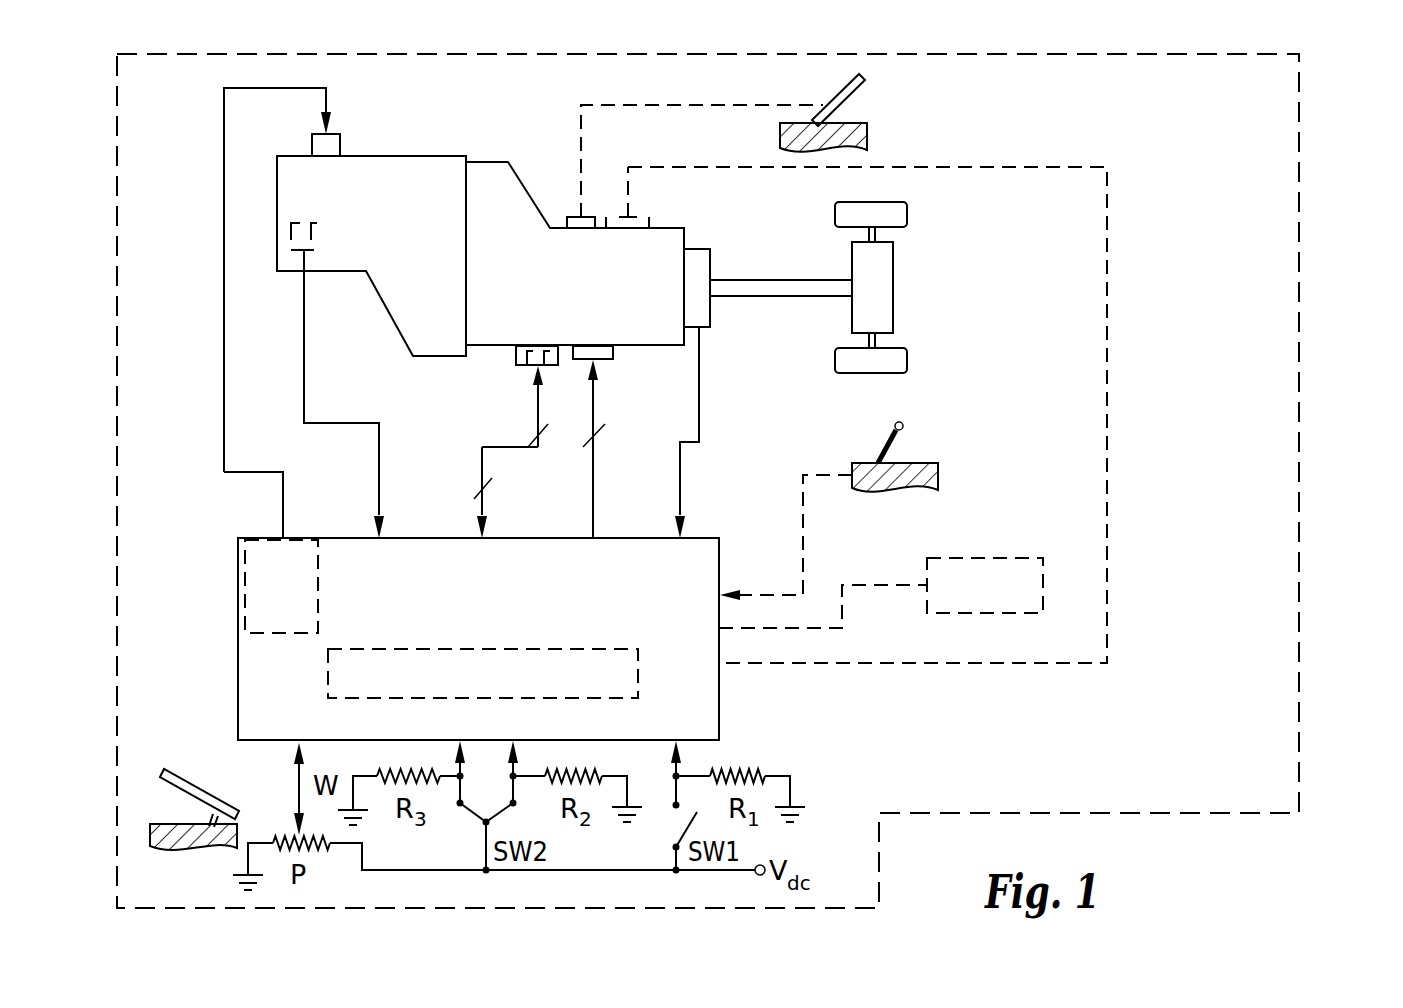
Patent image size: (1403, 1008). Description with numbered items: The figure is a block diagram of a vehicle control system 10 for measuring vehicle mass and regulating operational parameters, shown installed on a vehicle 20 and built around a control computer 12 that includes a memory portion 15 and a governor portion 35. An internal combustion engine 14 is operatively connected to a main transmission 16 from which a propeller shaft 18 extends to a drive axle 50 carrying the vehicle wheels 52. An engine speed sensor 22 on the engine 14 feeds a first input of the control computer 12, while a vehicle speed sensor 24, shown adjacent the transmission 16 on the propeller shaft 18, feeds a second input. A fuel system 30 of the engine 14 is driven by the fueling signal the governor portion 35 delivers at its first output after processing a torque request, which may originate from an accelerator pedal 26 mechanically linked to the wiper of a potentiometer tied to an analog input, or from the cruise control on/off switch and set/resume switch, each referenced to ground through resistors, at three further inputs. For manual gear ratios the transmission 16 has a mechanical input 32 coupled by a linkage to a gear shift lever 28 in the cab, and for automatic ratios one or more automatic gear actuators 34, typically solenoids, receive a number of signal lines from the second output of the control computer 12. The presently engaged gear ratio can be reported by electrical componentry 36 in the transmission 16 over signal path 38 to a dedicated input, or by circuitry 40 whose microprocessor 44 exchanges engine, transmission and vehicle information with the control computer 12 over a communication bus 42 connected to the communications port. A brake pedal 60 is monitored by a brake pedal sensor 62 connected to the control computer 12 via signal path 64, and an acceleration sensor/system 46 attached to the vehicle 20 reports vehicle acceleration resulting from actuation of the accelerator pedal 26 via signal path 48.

The control system 10 is at (1318, 400).
The control computer 12 is at (238, 665).
The internal combustion engine 14 is at (423, 156).
The memory portion 15 is at (638, 670).
The main transmission 16 is at (480, 162).
The propeller shaft 18 is at (764, 280).
The vehicle 20 is at (1299, 118).
The engine speed sensor 22 is at (291, 233).
The vehicle speed sensor 24 is at (700, 249).
The accelerator pedal 26 is at (176, 773).
The gear shift lever 28 is at (862, 90).
The fuel system 30 is at (338, 134).
The mechanical input 32 is at (572, 216).
The automatic gear actuators 34 is at (615, 360).
The governor portion 35 is at (245, 598).
The electrical componentry 36 is at (615, 216).
The signal path 38 is at (1057, 167).
The circuitry 40 is at (516, 355).
The communication bus 42 is at (482, 448).
The microprocessor 44 is at (540, 372).
The acceleration sensor/system 46 is at (980, 558).
The signal path 48 is at (880, 585).
The drive axle 50 is at (893, 262).
The vehicle wheels 52 is at (907, 212).
The brake pedal 60 is at (905, 425).
The brake pedal sensor 62 is at (880, 448).
The signal path 64 is at (803, 548).